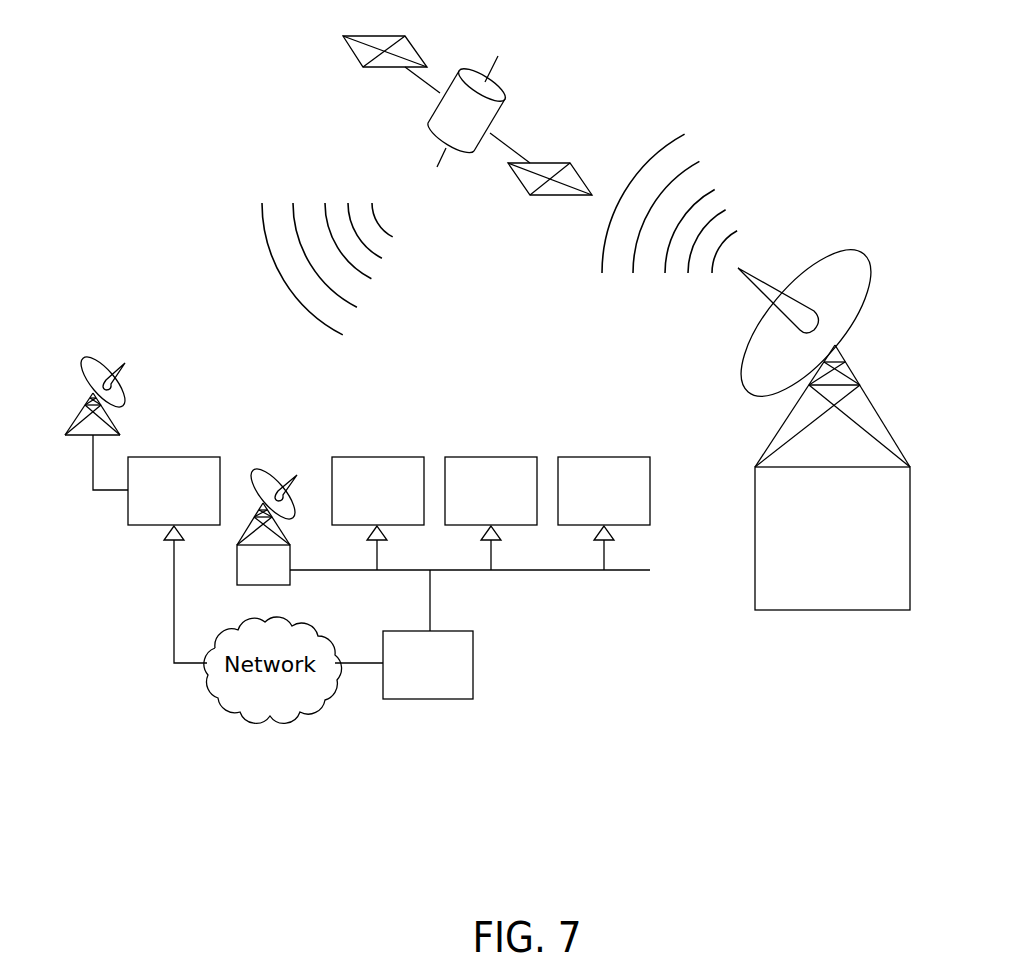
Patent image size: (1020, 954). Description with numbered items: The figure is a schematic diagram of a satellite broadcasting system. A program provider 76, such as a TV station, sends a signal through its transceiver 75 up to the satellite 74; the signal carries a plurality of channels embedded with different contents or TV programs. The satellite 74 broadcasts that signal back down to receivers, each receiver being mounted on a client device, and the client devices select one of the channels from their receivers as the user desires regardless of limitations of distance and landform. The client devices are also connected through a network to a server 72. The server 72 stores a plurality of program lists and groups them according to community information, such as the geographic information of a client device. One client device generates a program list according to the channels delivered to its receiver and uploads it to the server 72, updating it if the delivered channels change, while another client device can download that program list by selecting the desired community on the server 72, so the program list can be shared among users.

The server 72 is at (427, 700).
The satellite 74 is at (474, 78).
The transceiver 75 is at (840, 256).
The program provider 76 is at (832, 612).